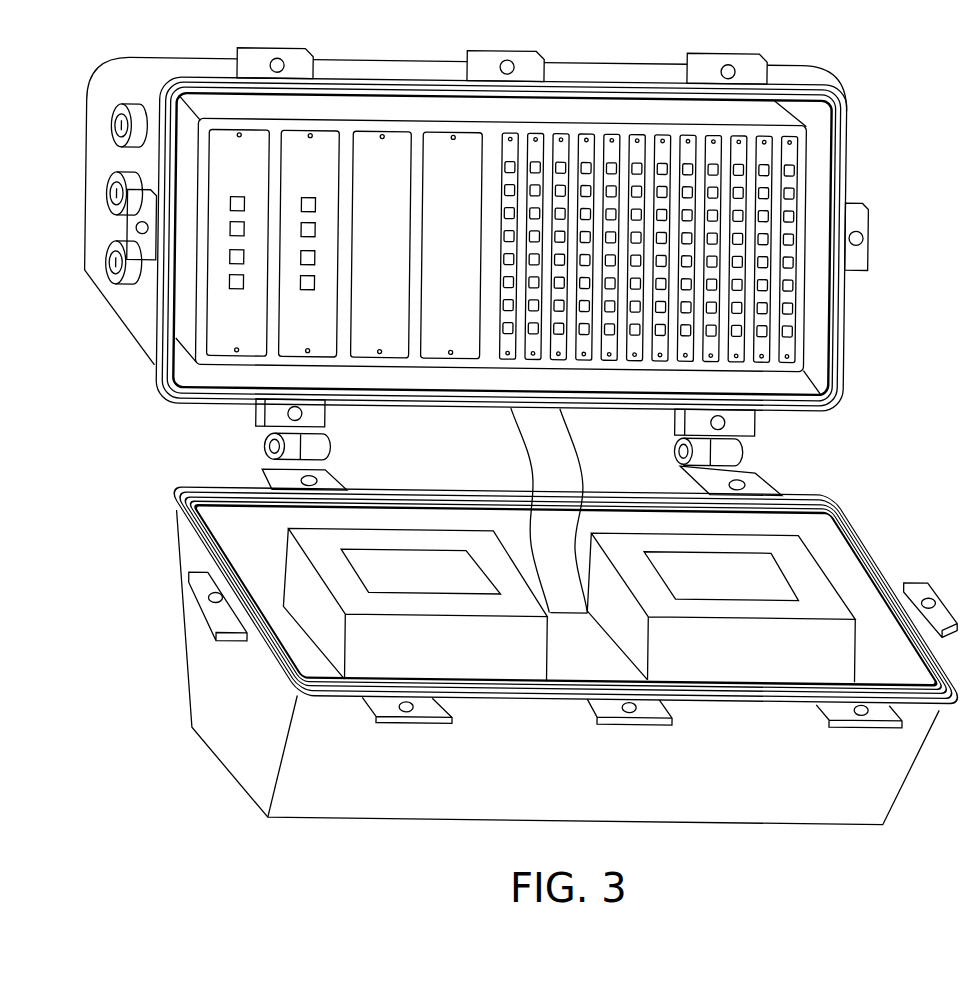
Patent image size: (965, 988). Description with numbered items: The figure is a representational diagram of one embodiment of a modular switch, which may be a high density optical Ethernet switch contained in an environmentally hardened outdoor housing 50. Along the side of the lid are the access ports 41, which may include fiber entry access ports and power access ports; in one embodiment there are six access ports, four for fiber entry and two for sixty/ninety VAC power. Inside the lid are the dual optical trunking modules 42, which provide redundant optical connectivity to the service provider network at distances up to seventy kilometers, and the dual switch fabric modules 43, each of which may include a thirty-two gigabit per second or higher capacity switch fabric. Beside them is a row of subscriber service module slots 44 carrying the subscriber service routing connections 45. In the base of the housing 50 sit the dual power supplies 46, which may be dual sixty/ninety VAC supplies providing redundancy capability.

The access ports 41 is at (118, 130).
The dual optical trunking modules 42 is at (224, 335).
The dual switch fabric modules 43 is at (367, 335).
The subscriber service module slots 44 is at (608, 146).
The subscriber service routing connections 45 is at (738, 187).
The dual power supplies 46 is at (485, 562).
The environmentally hardened outdoor housing 50 is at (830, 798).